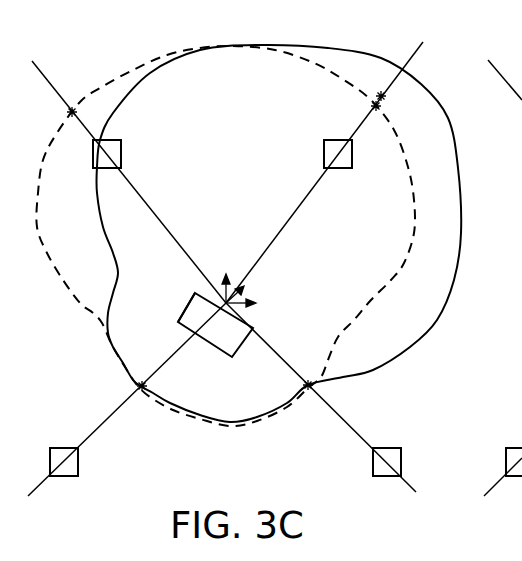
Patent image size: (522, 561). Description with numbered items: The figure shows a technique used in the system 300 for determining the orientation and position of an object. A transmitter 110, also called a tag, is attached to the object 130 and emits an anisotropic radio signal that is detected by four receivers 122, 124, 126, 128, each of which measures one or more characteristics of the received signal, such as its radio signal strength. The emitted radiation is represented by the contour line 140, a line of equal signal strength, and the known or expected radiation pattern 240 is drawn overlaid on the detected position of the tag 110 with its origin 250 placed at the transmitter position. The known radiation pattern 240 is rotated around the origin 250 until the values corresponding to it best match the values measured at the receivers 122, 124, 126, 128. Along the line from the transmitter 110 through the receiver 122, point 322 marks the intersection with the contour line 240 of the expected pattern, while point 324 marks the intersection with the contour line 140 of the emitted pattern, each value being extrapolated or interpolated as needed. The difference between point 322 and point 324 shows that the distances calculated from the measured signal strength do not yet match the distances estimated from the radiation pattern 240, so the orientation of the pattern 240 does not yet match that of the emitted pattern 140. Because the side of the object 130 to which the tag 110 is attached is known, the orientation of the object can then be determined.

The system 300 is at (256, 26).
The transmitter 110 is at (248, 317).
The object 130 is at (190, 300).
The origin 250 is at (240, 291).
The receiver 122 is at (324, 152).
The receiver 124 is at (122, 152).
The receiver 126 is at (78, 462).
The receiver 128 is at (373, 462).
The contour line 140 is at (371, 371).
The known radiation pattern 240 is at (413, 186).
The point 322 is at (376, 106).
The point 324 is at (383, 96).